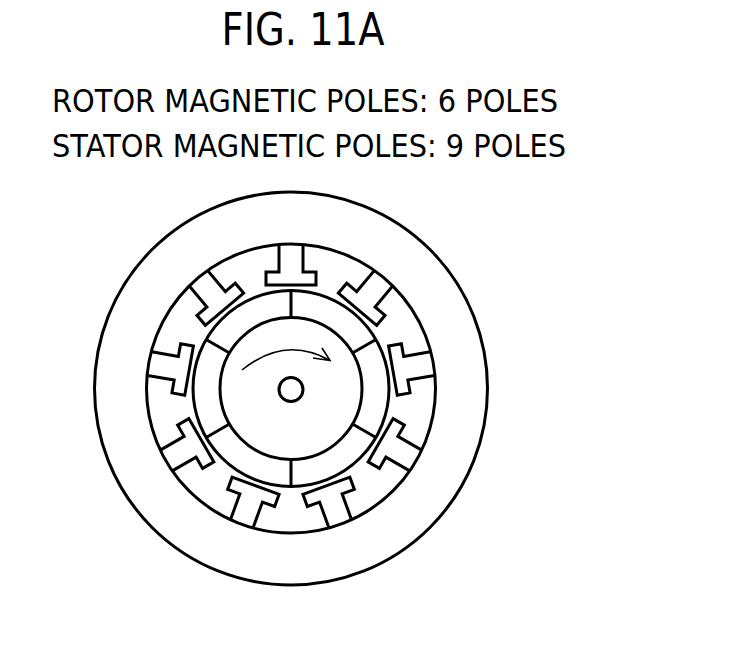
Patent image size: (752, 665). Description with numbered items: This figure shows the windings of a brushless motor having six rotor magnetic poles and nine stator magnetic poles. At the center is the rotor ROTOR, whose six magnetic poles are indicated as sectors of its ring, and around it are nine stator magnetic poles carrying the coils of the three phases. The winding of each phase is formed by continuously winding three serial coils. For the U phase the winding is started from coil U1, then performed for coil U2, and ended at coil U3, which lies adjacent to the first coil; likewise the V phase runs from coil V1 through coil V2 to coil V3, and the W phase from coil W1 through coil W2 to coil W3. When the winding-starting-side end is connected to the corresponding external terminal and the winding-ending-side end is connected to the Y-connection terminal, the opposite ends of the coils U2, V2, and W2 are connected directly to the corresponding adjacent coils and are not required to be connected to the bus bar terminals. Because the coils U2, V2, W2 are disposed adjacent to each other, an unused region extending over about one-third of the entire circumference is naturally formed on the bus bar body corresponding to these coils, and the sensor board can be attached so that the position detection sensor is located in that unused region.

The rotor ROTOR is at (257, 435).
The coil U1 is at (291, 243).
The coil V1 is at (378, 283).
The coil W1 is at (434, 367).
The coil U2 is at (415, 454).
The coil V2 is at (337, 523).
The coil W2 is at (244, 523).
The coil U3 is at (166, 454).
The coil V3 is at (148, 367).
The coil W3 is at (196, 286).